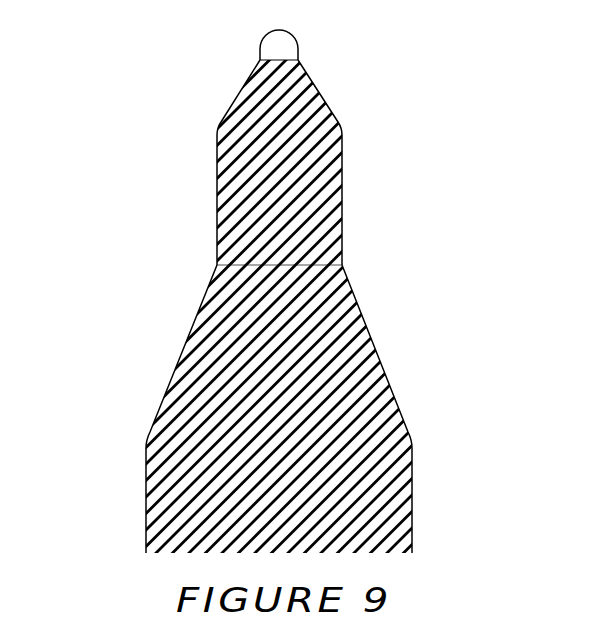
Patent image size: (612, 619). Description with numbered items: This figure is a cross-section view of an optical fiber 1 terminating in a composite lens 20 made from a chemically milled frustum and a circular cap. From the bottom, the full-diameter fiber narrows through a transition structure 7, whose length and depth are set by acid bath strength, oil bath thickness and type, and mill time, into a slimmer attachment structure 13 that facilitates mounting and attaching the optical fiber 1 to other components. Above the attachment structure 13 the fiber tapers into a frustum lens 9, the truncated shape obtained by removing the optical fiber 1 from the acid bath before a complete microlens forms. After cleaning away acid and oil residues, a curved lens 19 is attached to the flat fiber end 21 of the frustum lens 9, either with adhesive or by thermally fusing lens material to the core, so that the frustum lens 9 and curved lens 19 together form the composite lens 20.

The optical fiber 1 is at (390, 517).
The transition structure 7 is at (390, 373).
The frustum lens 9 is at (337, 95).
The attachment structure 13 is at (200, 185).
The curved lens 19 is at (290, 43).
The composite lens 20 is at (215, 115).
The fiber end 21 is at (303, 62).